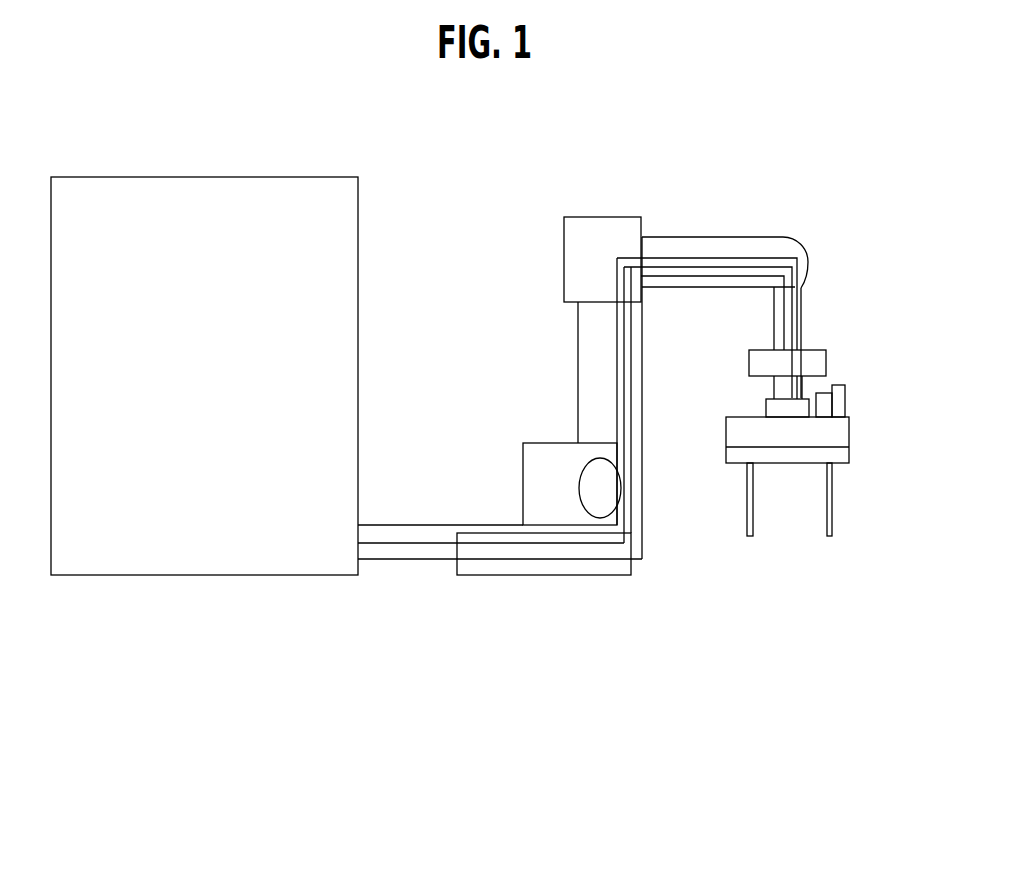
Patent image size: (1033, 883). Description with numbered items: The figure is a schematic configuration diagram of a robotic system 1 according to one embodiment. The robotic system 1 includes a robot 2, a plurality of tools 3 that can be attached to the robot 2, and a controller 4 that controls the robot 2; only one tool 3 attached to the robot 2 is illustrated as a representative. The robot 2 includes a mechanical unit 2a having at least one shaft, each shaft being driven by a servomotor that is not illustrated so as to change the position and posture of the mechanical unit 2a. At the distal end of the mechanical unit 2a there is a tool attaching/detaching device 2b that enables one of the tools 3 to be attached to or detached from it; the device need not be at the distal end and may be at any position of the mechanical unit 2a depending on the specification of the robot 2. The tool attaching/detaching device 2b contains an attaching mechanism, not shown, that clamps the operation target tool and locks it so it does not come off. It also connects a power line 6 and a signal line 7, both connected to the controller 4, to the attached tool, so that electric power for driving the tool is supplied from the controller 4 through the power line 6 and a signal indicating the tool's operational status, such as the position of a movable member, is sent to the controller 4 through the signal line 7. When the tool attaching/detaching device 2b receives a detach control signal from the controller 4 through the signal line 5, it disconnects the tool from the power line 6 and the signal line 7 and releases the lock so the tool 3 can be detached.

The robotic system 1 is at (806, 671).
The robot 2 is at (585, 576).
The mechanical unit 2a is at (703, 237).
The tool attaching/detaching device 2b is at (820, 350).
The tool 3 is at (813, 433).
The controller 4 is at (292, 575).
The signal line 5 is at (413, 560).
The power line 6 is at (420, 542).
The signal line 7 is at (475, 526).